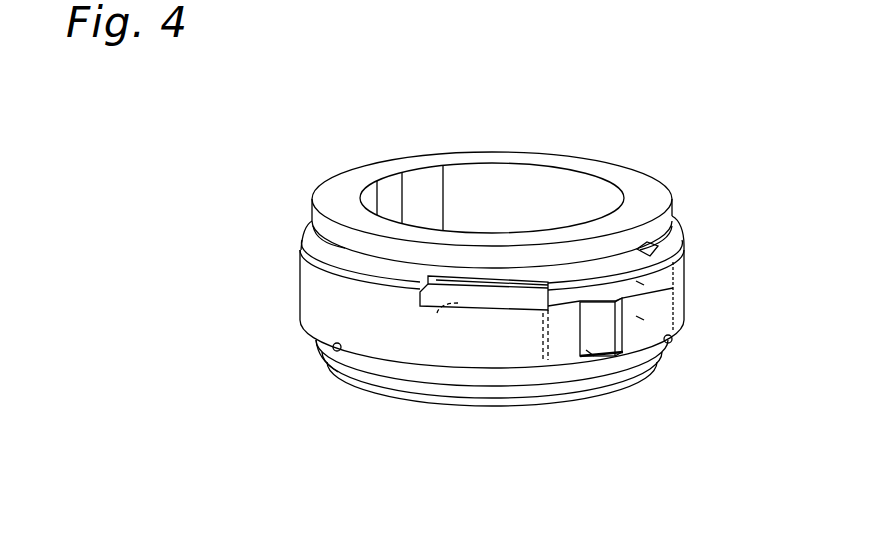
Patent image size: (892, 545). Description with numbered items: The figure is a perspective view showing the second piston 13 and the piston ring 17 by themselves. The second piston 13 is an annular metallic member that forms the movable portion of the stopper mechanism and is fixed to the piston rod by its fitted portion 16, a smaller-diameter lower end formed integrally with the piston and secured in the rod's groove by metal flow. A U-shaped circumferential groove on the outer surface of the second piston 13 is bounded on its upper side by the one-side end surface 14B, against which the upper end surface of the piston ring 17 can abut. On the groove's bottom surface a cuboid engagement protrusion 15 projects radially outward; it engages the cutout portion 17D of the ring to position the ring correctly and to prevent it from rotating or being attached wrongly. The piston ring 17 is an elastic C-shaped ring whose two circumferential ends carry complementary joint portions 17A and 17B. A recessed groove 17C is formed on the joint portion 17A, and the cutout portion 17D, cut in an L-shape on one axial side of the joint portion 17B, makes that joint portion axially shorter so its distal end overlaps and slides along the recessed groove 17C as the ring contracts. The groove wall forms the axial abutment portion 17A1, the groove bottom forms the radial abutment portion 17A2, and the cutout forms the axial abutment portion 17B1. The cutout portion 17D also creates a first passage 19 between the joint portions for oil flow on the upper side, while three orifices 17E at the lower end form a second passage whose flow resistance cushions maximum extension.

The second piston 13 is at (491, 140).
The one-side end surface 14B is at (300, 252).
The engagement protrusion 15 is at (497, 276).
The fitted portion 16 is at (370, 393).
The piston ring 17 is at (290, 276).
The joint portion 17A is at (558, 298).
The axial abutment portion 17A1 is at (640, 318).
The radial abutment portion 17A2 is at (590, 354).
The joint portion 17B is at (562, 340).
The axial abutment portion 17B1 is at (640, 283).
The recessed groove 17C is at (625, 352).
The cutout portion 17D is at (437, 313).
The orifice 17E is at (338, 351).
The first passage 19 is at (515, 297).